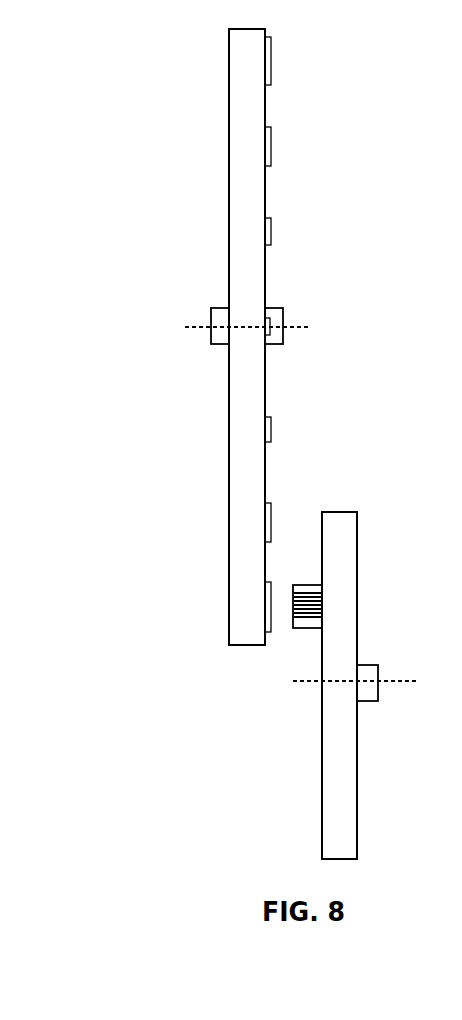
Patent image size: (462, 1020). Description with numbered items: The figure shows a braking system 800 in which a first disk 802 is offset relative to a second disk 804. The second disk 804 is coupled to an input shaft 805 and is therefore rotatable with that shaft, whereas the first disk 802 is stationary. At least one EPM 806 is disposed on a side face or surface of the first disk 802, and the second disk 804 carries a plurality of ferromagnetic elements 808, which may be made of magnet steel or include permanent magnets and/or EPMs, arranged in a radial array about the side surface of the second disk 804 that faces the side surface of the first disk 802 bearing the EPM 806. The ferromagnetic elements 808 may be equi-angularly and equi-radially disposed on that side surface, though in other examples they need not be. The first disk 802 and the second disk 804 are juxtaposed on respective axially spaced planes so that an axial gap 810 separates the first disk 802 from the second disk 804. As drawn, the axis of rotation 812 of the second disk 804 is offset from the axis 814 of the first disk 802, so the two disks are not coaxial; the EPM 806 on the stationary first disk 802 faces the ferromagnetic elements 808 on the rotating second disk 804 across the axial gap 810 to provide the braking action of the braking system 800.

The braking system 800 is at (168, 101).
The first disk 802 is at (340, 512).
The second disk 804 is at (240, 153).
The input shaft 805 is at (276, 308).
The EPM 806 is at (316, 585).
The ferromagnetic elements 808 is at (272, 418).
The axial gap 810 is at (276, 645).
The axis of rotation 812 is at (195, 326).
The axis 814 is at (400, 681).